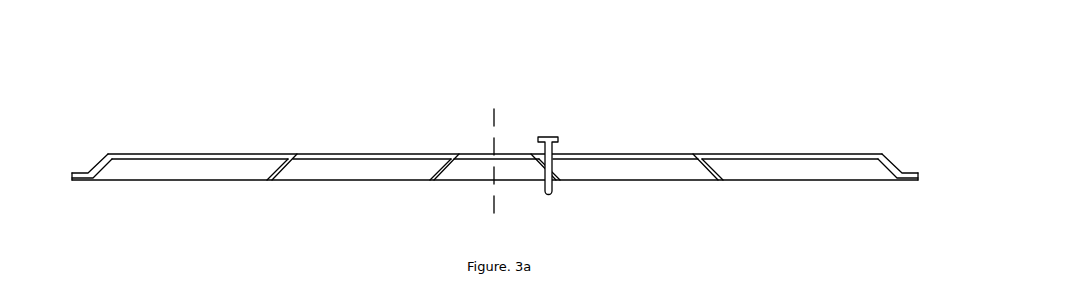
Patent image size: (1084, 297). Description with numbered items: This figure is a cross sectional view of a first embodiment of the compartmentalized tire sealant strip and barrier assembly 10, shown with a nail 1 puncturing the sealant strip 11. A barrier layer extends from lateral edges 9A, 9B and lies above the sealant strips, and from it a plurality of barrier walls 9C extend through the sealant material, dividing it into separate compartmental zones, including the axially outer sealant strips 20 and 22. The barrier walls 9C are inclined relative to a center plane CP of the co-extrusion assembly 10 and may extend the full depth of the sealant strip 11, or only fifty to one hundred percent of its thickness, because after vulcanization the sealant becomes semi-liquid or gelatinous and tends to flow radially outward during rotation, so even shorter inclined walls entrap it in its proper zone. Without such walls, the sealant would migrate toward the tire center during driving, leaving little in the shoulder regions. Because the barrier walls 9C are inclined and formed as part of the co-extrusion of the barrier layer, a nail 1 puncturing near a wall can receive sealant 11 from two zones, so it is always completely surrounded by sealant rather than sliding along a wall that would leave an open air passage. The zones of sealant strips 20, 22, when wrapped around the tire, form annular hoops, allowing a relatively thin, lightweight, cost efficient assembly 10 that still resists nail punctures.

The nail 1 is at (548, 137).
The compartmentalized tire sealant strip and barrier assembly 10 is at (623, 146).
The sealant strip 11 is at (376, 165).
The axially outer sealant strip 20 is at (163, 183).
The axially outer sealant strip 22 is at (807, 173).
The lateral edge 9A is at (88, 173).
The lateral edge 9B is at (905, 172).
The barrier wall 9C is at (277, 182).
The center plane CP is at (495, 157).